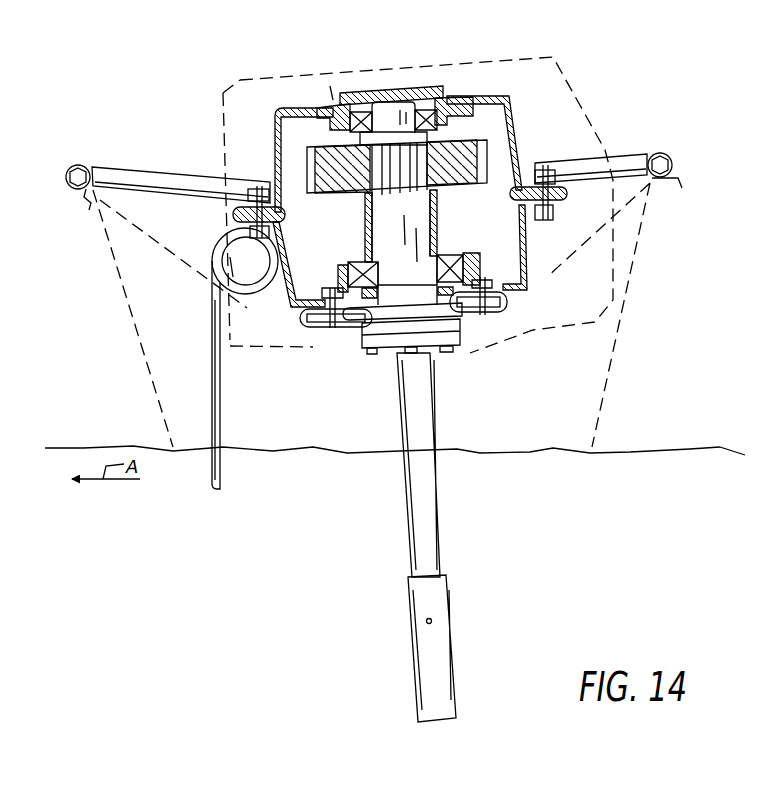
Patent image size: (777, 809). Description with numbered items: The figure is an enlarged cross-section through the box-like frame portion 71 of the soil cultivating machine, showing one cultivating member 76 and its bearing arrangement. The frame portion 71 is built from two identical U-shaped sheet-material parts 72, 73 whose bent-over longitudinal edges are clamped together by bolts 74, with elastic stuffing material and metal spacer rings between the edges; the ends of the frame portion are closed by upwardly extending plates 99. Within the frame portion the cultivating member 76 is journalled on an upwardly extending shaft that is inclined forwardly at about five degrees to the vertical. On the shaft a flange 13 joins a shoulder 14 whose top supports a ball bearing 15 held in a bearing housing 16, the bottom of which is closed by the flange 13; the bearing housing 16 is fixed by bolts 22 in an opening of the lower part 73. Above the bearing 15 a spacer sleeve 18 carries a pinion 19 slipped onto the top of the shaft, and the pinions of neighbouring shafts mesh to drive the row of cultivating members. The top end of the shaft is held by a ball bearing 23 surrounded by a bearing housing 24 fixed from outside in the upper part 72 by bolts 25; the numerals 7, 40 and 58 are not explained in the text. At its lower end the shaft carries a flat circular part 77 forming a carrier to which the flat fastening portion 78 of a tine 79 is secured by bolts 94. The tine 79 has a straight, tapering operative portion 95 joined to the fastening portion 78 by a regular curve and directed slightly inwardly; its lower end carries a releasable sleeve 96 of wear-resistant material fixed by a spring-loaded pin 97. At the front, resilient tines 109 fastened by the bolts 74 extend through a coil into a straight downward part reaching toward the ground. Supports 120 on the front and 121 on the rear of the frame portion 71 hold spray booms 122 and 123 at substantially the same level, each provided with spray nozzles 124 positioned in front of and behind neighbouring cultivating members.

The stator block 7 is at (485, 176).
The flange 13 is at (303, 358).
The shoulder 14 is at (407, 292).
The ball bearing 15 is at (453, 257).
The bearing housing 16 is at (346, 270).
The spacer sleeve 18 is at (440, 228).
The pinion 19 is at (452, 222).
The bolts 22 is at (330, 330).
The ball bearing 23 is at (361, 110).
The bearing housing 24 is at (424, 92).
The bolts 25 is at (330, 86).
The mounting brackets 40 is at (304, 330).
The spacer 58 is at (365, 208).
The box-like frame portion 71 is at (284, 312).
The U-shaped part 72 is at (275, 127).
The U-shaped part 73 is at (276, 308).
The bolts 74 is at (259, 188).
The cultivating members 76 is at (492, 491).
The flat circular part 77 is at (401, 332).
The fastening portion 78 is at (358, 353).
The tine 79 is at (400, 470).
The bolts 94 is at (431, 340).
The operative portion 95 is at (417, 513).
The releasable sleeve 96 is at (428, 660).
The spring-loaded pin 97 is at (427, 623).
The plate 99 is at (257, 83).
The integral tines 109 is at (211, 340).
The support 120 is at (148, 178).
The support 121 is at (617, 157).
The spray boom 122 is at (80, 168).
The spray boom 123 is at (666, 154).
The spray nozzles 124 is at (89, 197).